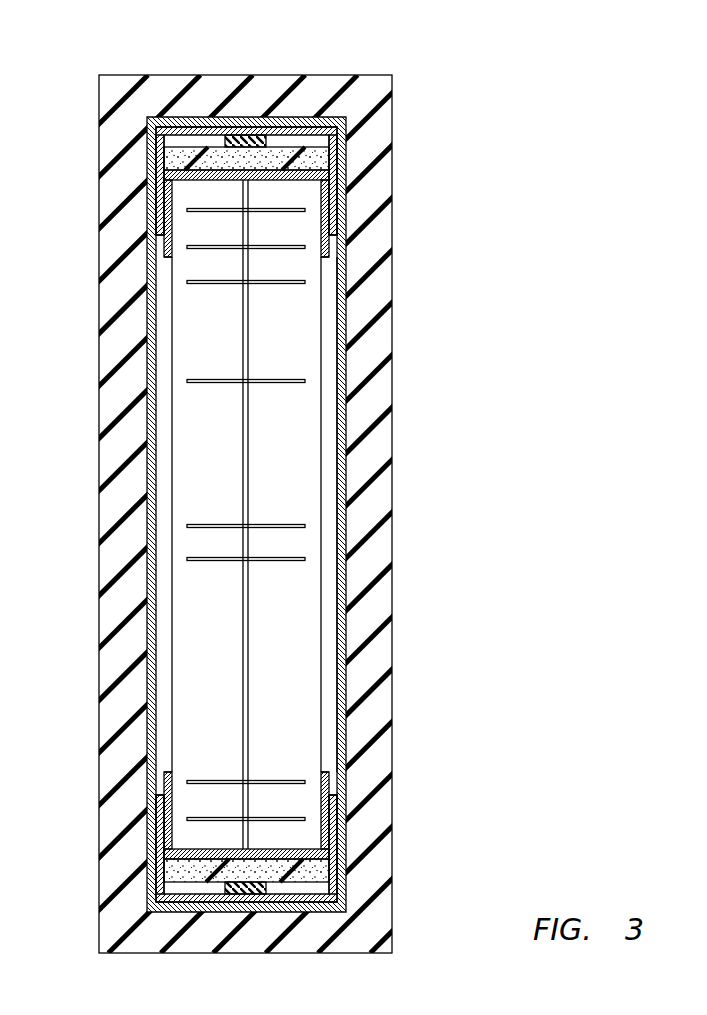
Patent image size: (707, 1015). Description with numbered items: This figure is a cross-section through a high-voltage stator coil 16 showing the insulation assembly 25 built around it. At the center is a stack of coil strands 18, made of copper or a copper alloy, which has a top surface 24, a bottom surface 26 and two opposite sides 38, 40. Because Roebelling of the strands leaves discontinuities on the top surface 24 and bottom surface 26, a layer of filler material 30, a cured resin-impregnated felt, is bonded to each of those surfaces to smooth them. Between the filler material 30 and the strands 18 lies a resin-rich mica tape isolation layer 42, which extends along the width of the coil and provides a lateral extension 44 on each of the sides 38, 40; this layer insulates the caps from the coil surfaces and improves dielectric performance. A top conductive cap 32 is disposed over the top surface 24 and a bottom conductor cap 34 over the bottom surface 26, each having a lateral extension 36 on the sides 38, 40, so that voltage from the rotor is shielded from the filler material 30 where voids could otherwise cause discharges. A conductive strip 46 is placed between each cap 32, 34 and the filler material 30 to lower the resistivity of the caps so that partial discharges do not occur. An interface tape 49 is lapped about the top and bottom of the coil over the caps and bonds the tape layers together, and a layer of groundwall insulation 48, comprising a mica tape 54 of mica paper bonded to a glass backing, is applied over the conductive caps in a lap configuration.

The stator coil 16 is at (245, 515).
The coil strands 18 is at (209, 445).
The top surface 24 is at (207, 185).
The insulation assembly 25 is at (356, 98).
The bottom surface 26 is at (207, 848).
The filler material 30 is at (312, 163).
The top conductive cap 32 is at (297, 130).
The bottom conductor cap 34 is at (295, 907).
The lateral extension 36 is at (328, 198).
The side 38 is at (170, 342).
The side 40 is at (321, 343).
The isolation layer 42 is at (158, 195).
The lateral extension 44 is at (329, 247).
The conductive strip 46 is at (245, 123).
The groundwall insulation 48 is at (372, 503).
The interface tape 49 is at (340, 682).
The mica tape 54 is at (372, 605).